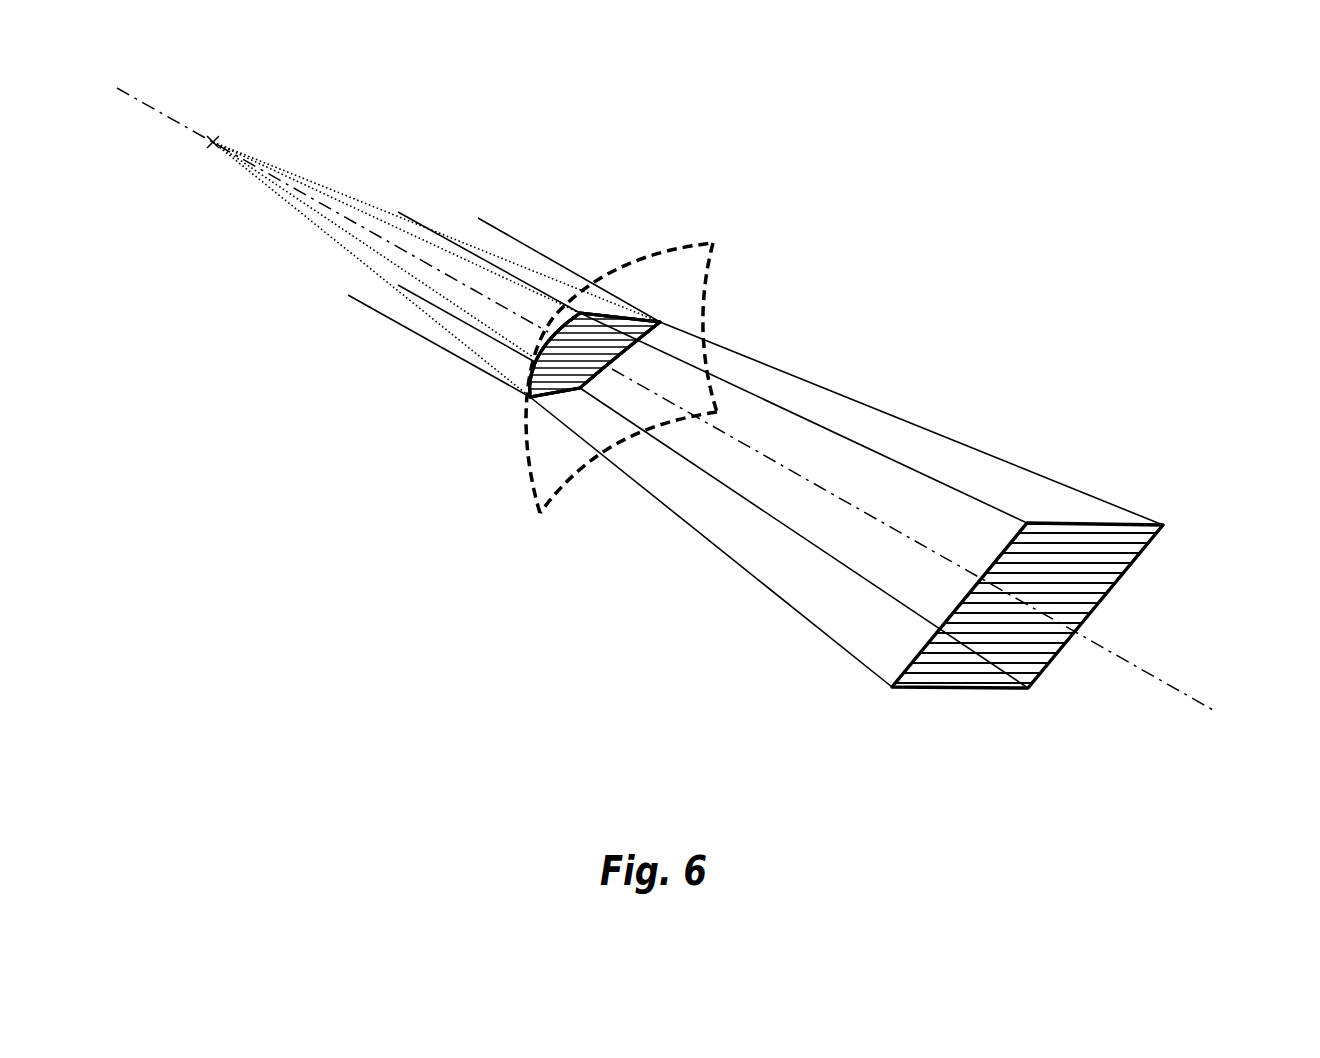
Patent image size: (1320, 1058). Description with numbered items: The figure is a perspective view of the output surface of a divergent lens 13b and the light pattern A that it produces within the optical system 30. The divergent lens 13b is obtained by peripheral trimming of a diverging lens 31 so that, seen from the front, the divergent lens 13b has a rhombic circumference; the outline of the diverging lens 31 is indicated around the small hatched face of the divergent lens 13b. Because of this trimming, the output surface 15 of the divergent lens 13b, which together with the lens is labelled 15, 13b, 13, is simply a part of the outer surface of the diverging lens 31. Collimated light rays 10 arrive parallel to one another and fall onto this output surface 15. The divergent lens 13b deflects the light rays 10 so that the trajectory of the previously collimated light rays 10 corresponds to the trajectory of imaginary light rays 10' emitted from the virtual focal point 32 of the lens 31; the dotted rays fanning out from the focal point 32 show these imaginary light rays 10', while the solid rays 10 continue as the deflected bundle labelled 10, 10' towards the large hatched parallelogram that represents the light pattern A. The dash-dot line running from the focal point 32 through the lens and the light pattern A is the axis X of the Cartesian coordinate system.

The focal point 32 is at (213, 138).
The light ray 10 is at (755, 402).
The light ray 10' is at (436, 294).
The lens 31 is at (722, 247).
The output surface 15 is at (647, 337).
The divergent lens 13b is at (647, 337).
The light guide 13 is at (647, 337).
The optical system 30 is at (907, 198).
The light pattern A is at (1130, 573).
The axis of the Cartesian coordinate system X is at (1213, 710).